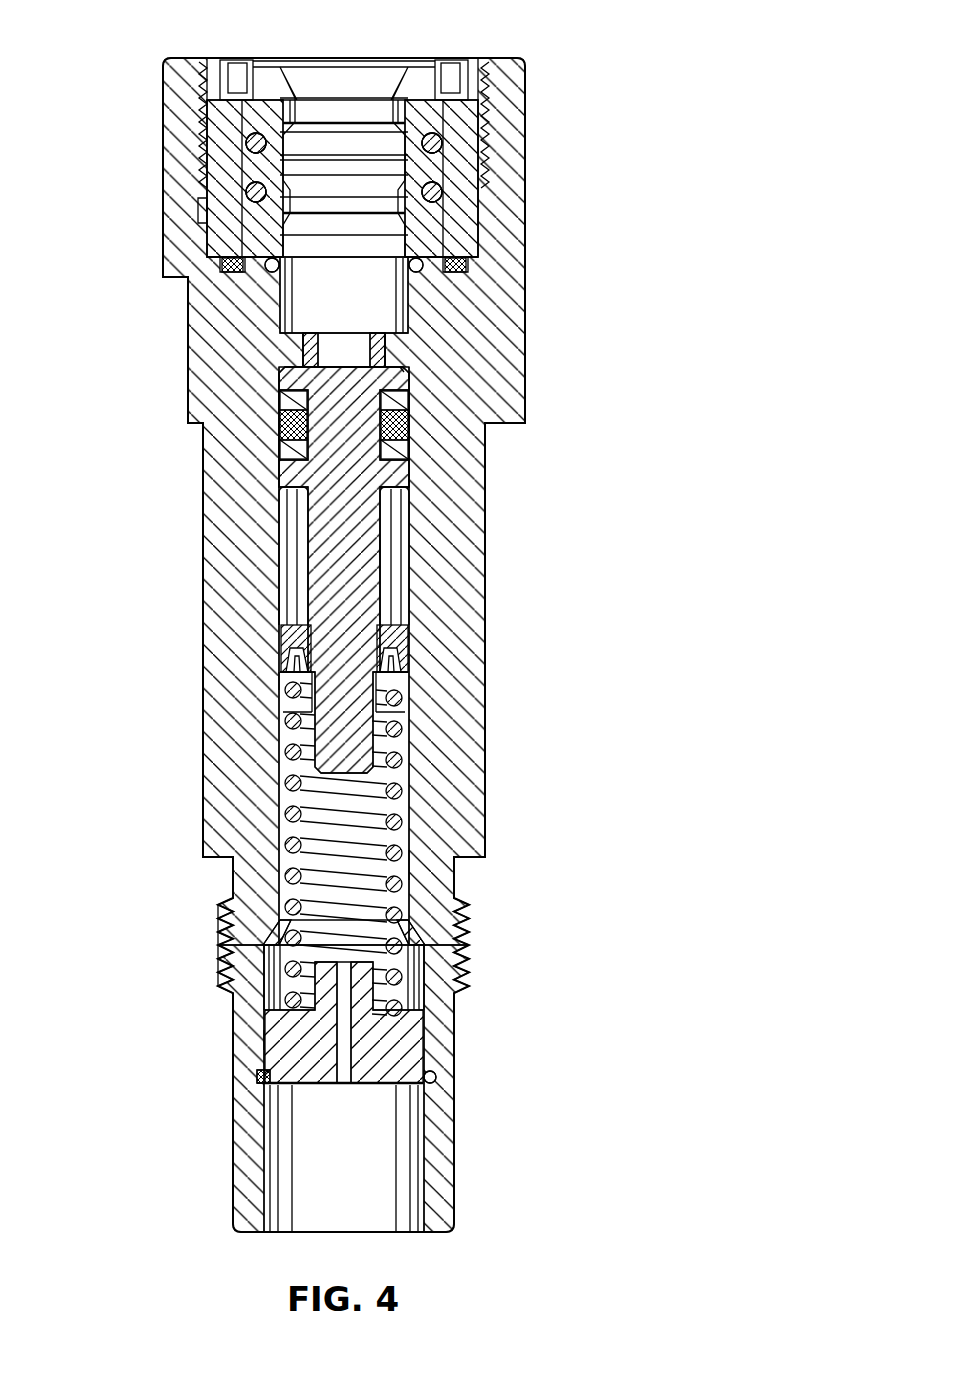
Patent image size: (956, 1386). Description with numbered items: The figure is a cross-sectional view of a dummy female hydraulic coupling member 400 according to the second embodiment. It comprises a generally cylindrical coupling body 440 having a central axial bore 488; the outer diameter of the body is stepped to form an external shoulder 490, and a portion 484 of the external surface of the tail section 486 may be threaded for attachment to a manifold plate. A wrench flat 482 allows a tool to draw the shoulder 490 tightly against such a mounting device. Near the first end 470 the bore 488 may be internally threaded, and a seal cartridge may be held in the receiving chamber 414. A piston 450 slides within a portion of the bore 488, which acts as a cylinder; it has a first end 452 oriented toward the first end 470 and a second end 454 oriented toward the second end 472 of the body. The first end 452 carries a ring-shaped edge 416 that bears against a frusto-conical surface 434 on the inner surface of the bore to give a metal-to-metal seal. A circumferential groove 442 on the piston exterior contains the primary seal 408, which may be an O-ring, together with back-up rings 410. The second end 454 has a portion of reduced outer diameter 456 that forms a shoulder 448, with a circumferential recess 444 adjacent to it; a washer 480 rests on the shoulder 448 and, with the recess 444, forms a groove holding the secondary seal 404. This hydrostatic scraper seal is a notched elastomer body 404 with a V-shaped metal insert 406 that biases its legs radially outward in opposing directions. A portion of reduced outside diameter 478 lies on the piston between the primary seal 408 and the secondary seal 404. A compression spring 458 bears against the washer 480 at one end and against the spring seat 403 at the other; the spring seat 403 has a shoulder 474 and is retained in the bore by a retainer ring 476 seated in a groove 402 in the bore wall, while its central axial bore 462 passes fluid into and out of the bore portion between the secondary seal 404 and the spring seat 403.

The dummy female hydraulic coupling member 400 is at (615, 191).
The groove 402 is at (436, 1077).
The spring seat 403 is at (272, 1040).
The secondary seal 404 is at (402, 640).
The V-shaped metal insert 406 is at (400, 657).
The primary seal 408 is at (402, 427).
The back-up rings 410 is at (402, 453).
The receiving chamber 414 is at (349, 86).
The ring-shaped edge 416 is at (400, 367).
The frusto-conical surface 434 is at (282, 375).
The coupling body 440 is at (218, 524).
The circumferential groove 442 is at (402, 493).
The circumferential recess 444 is at (282, 610).
The shoulder 448 is at (402, 620).
The piston 450 is at (281, 471).
The first end of piston 452 is at (370, 360).
The second end of piston 454 is at (404, 806).
The portion of reduced outer diameter 456 is at (400, 686).
The compression spring 458 is at (412, 866).
The central axial bore of spring seat 462 is at (350, 1020).
The first end of coupling body 470 is at (192, 58).
The second end of coupling body 472 is at (446, 1232).
The shoulder of spring seat 474 is at (262, 1074).
The retainer ring 476 is at (258, 1080).
The portion of reduced outside diameter 478 is at (402, 552).
The washer 480 is at (291, 680).
The wrench flat 482 is at (188, 338).
The threaded portion 484 is at (205, 897).
The tail section 486 is at (446, 1145).
The central axial bore 488 is at (322, 313).
The external shoulder 490 is at (215, 866).